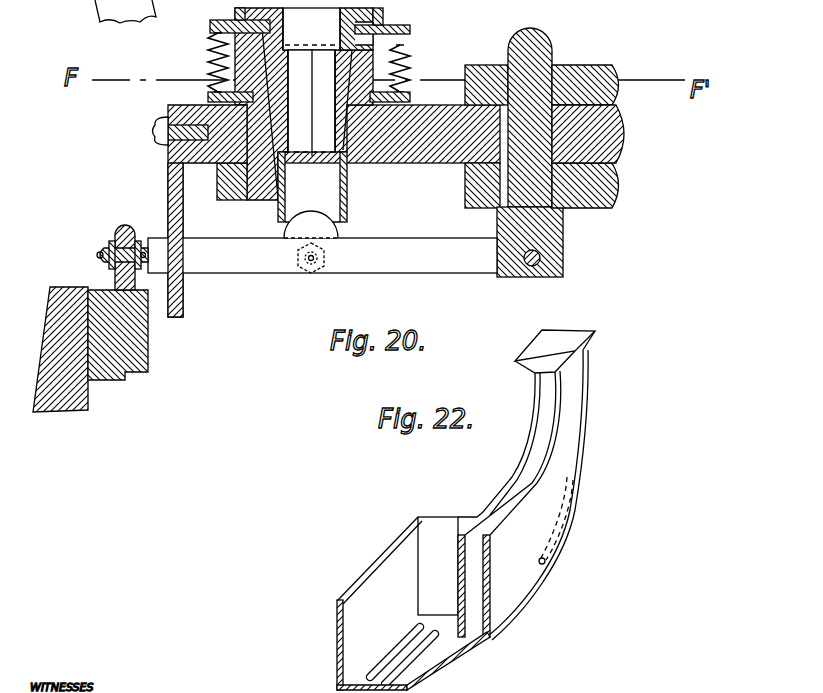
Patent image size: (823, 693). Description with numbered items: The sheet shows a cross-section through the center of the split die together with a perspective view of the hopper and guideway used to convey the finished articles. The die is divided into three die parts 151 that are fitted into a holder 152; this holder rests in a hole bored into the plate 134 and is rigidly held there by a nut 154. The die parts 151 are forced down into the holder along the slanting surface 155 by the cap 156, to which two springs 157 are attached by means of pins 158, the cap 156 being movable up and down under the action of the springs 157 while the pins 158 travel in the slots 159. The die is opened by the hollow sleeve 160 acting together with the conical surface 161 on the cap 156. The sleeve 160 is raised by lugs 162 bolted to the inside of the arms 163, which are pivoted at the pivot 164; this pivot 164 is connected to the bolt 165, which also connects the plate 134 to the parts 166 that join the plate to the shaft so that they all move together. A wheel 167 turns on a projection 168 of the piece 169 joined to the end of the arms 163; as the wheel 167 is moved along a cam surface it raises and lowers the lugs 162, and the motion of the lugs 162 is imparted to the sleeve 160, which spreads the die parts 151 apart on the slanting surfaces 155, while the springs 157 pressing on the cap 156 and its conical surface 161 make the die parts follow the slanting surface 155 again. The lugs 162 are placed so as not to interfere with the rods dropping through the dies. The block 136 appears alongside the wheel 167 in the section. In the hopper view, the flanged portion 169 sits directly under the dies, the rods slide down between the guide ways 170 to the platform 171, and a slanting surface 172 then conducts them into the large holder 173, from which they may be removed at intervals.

In FIG. 20, the plate 134 is at (626, 157).
In FIG. 20, the bracket block 136 is at (82, 398).
In FIG. 20, the die parts 151 is at (262, 70).
In FIG. 20, the holder 152 is at (408, 96).
In FIG. 20, the nut 154 is at (388, 200).
In FIG. 20, the slanting surface 155 is at (226, 200).
In FIG. 20, the cap 156 is at (376, 13).
In FIG. 20, the springs 157 is at (413, 47).
In FIG. 20, the pins 158 is at (212, 37).
In FIG. 20, the slots 159 is at (237, 17).
In FIG. 20, the hollow sleeve 160 is at (349, 222).
In FIG. 20, the conical surface 161 is at (335, 42).
In FIG. 20, the lugs 162 is at (290, 268).
In FIG. 20, the arms 163 is at (322, 240).
In FIG. 20, the pivot 164 is at (562, 262).
In FIG. 20, the bolt 165 is at (558, 38).
In FIG. 20, the parts 166 is at (622, 76).
In FIG. 20, the wheel 167 is at (120, 226).
In FIG. 20, the projection 168 is at (97, 255).
In FIG. 20, the piece / flanged portion 169 is at (147, 272).
In FIG. 22, the piece / flanged portion 169 is at (593, 338).
In FIG. 22, the guide ways 170 is at (533, 447).
In FIG. 22, the platform 171 is at (497, 638).
In FIG. 22, the slanting surface 172 is at (463, 652).
In FIG. 22, the large holder 173 is at (410, 601).